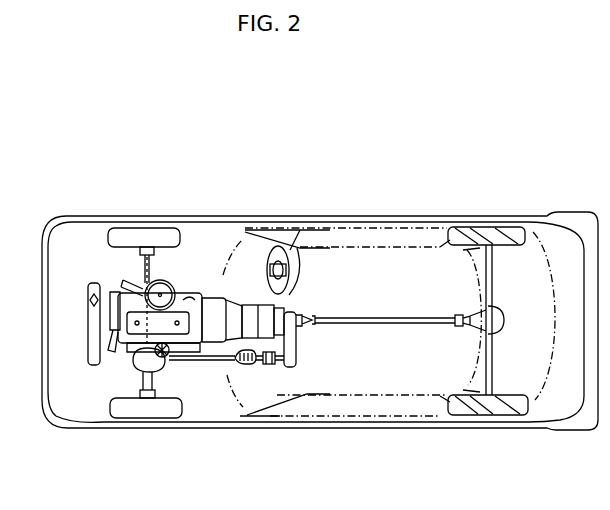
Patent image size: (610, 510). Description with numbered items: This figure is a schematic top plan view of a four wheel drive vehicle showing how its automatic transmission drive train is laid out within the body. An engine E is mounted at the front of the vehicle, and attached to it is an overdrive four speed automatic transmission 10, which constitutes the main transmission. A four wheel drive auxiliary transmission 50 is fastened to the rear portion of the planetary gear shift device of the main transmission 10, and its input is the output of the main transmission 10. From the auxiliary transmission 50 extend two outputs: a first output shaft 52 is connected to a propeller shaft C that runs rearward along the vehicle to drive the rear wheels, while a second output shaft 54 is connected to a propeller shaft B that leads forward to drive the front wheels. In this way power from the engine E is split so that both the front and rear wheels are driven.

The engine E is at (199, 300).
The overdrive four speed automatic transmission 10 is at (240, 317).
The four wheel drive auxiliary transmission 50 is at (273, 317).
The first output shaft 52 is at (297, 364).
The second output shaft 54 is at (272, 366).
The propeller shaft B is at (207, 366).
The propeller shaft C is at (385, 326).